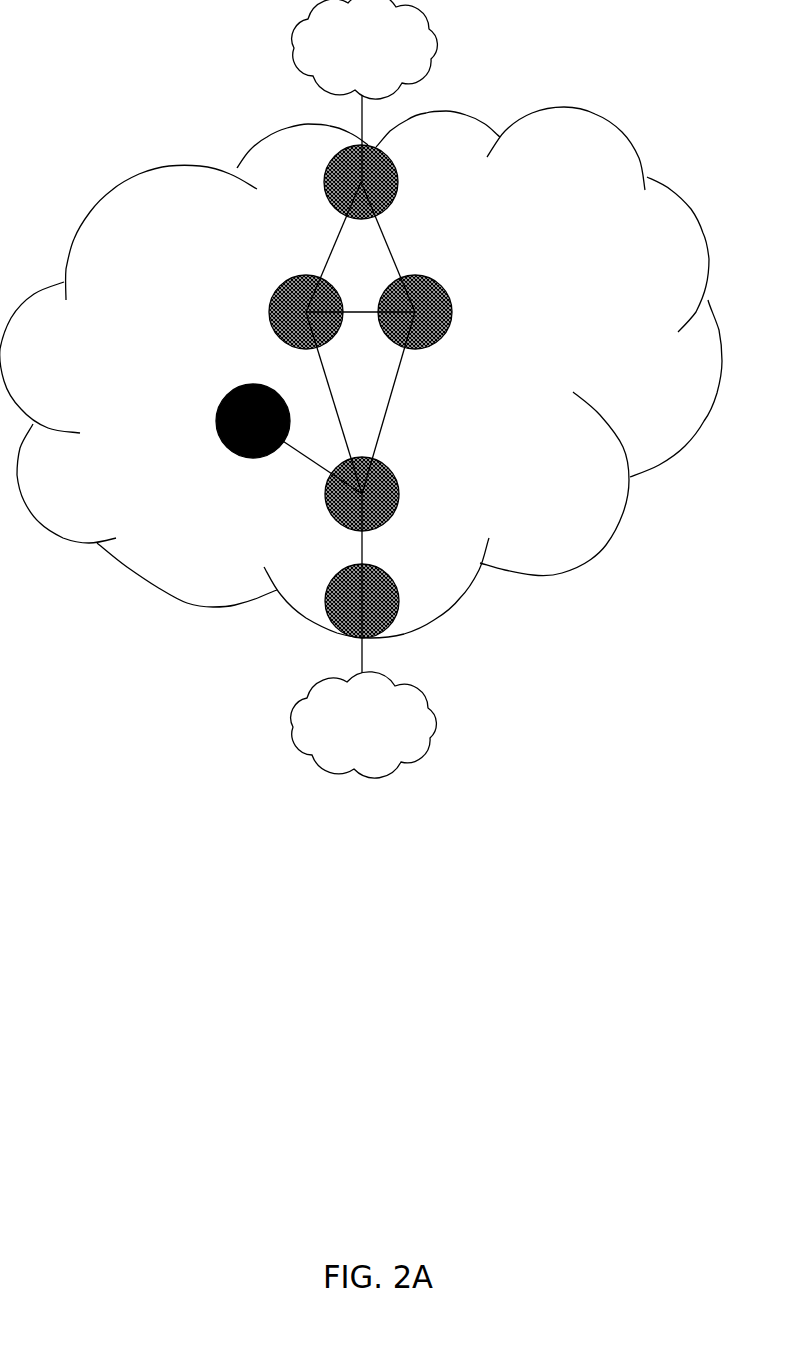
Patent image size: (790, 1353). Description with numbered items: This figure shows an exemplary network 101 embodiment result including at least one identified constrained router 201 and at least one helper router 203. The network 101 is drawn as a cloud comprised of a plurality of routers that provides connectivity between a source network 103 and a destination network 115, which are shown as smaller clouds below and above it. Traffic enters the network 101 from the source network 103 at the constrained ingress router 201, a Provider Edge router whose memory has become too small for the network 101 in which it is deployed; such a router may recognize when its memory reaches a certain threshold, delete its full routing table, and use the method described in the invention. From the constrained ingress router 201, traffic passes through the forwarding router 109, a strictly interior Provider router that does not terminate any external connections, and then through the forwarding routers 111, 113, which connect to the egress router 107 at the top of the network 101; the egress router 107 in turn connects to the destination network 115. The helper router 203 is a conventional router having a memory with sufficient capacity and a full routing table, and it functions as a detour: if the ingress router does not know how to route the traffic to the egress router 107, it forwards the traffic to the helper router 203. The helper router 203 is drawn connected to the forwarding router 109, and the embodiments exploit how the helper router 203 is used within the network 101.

The network 101 is at (622, 202).
The source network 103 is at (451, 725).
The egress router 107 is at (436, 182).
The forwarding router 109 is at (456, 495).
The forwarding router 111 is at (212, 312).
The forwarding router 113 is at (510, 312).
The destination network 115 is at (473, 49).
The constrained router 201 is at (438, 614).
The helper router 203 is at (179, 421).